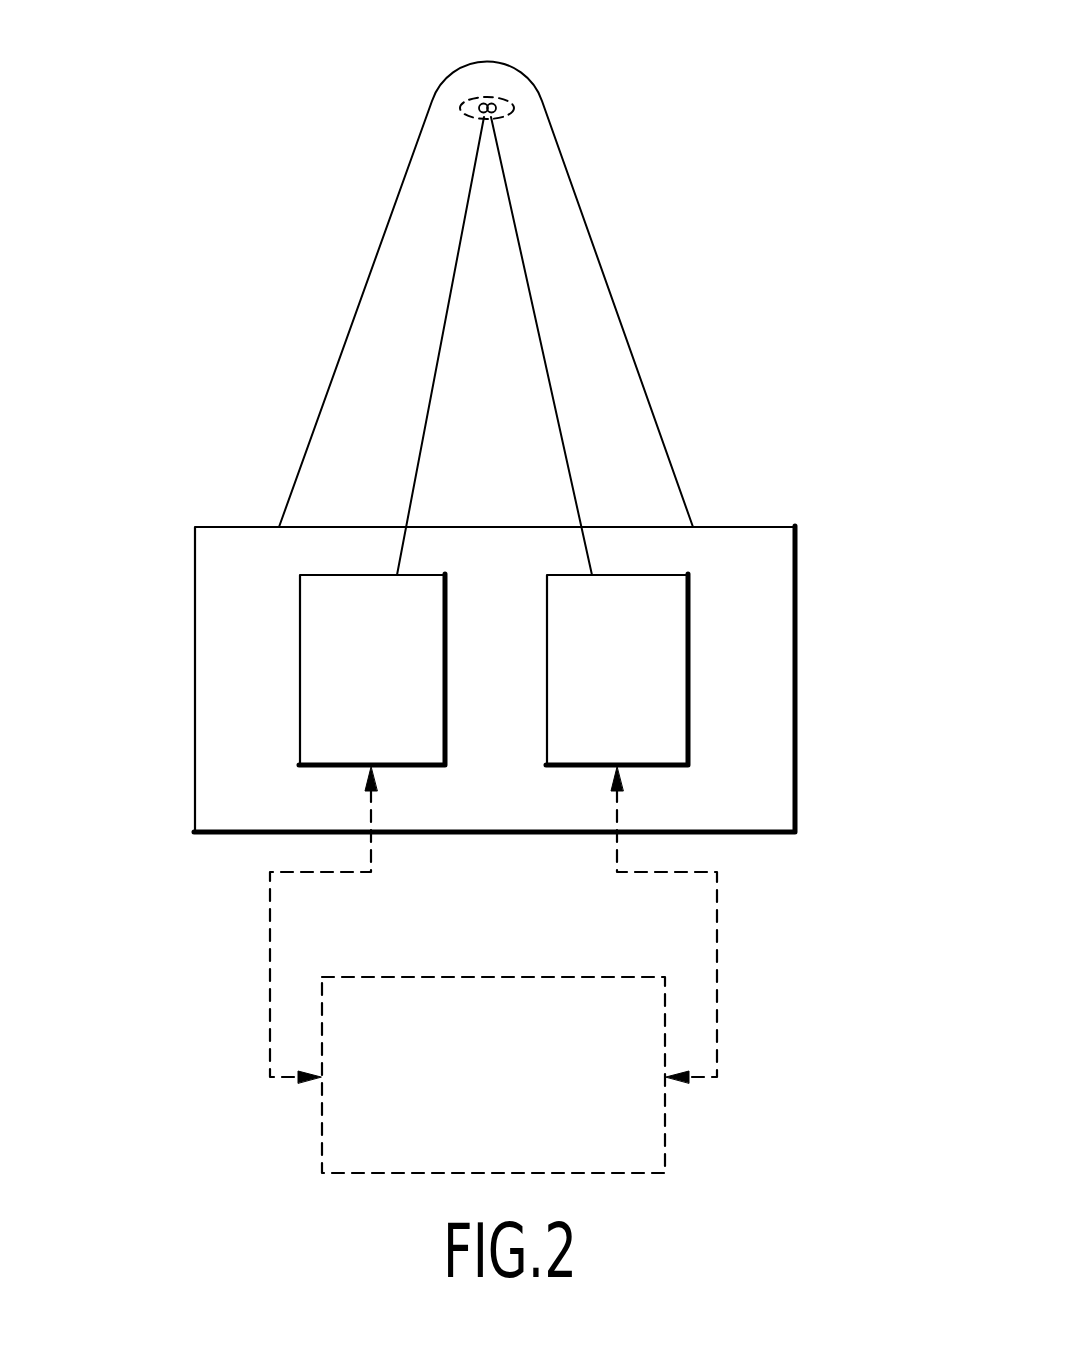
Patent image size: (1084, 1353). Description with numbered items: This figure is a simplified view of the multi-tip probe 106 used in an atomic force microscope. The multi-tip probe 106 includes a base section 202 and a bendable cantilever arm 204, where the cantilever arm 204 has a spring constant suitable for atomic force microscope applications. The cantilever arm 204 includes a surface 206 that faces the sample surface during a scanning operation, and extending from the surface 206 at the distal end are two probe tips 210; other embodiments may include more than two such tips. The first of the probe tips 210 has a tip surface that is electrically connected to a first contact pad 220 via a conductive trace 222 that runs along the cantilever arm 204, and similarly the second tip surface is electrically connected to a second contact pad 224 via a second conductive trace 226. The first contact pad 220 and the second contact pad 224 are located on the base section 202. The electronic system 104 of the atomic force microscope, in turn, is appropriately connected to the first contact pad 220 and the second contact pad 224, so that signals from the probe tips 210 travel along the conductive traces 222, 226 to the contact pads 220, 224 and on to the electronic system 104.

The multi-tip probe 106 is at (355, 153).
The probe tips 210 is at (512, 106).
The cantilever arm 204 is at (588, 228).
The surface 206 is at (625, 455).
The conductive trace 222 is at (447, 313).
The second conductive trace 226 is at (540, 327).
The first contact pad 220 is at (300, 702).
The second contact pad 224 is at (690, 688).
The base section 202 is at (797, 783).
The electronic system 104 is at (322, 1115).